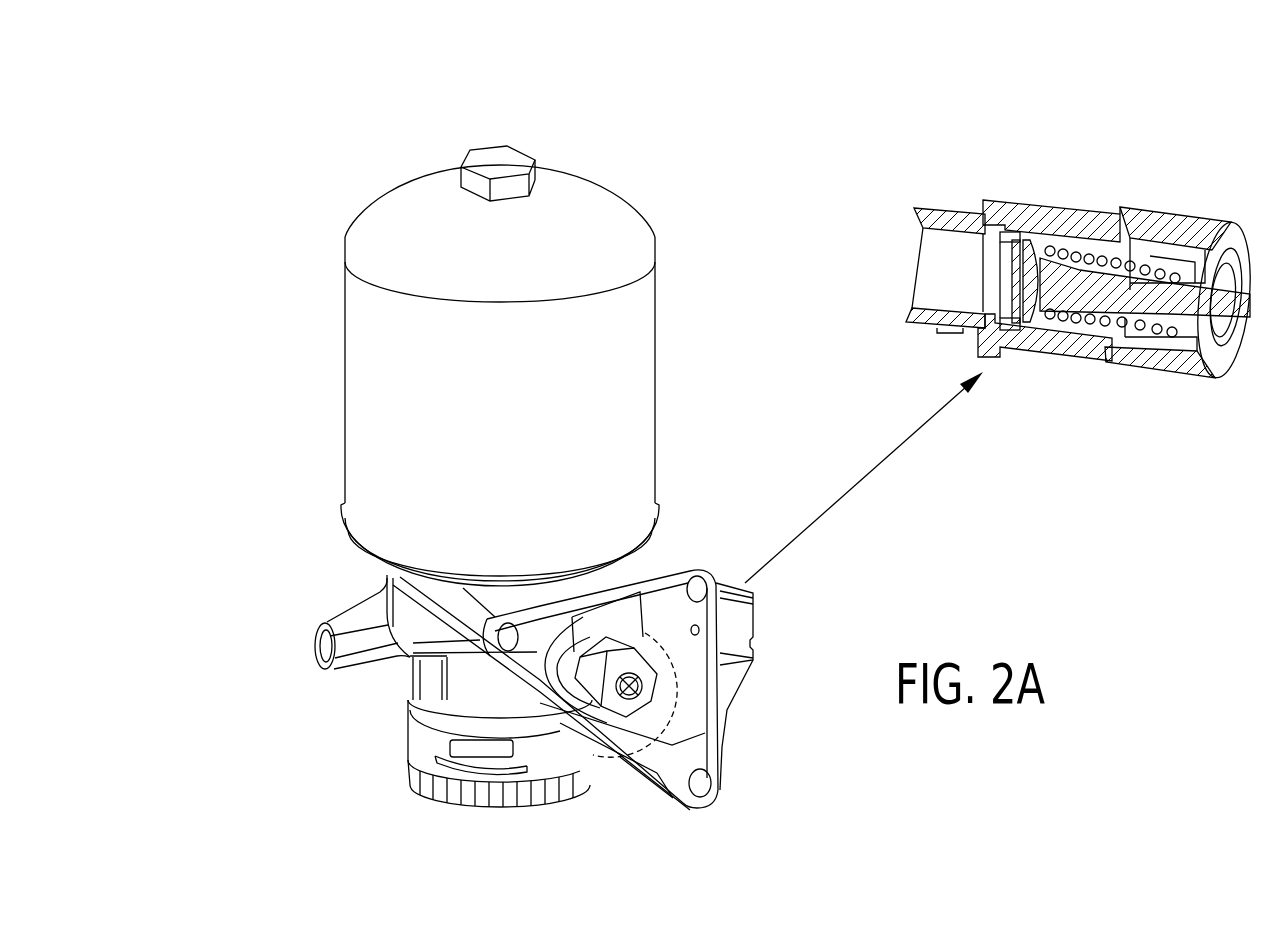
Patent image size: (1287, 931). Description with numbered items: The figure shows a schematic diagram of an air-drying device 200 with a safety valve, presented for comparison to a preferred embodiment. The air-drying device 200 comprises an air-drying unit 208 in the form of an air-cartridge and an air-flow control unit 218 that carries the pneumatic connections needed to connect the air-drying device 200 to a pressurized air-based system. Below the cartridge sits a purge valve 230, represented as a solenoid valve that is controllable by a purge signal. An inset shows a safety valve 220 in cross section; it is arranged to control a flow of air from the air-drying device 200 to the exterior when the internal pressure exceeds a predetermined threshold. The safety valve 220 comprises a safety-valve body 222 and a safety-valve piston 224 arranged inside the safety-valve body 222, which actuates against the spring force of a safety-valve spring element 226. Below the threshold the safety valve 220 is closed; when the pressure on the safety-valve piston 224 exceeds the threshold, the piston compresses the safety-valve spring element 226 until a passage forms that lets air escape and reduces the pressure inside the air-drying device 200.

The air-drying device 200 is at (373, 155).
The air-drying unit 208 is at (328, 336).
The air-flow control unit 218 is at (323, 603).
The safety valve 220 is at (1058, 183).
The safety-valve body 222 is at (1178, 207).
The safety-valve piston 224 is at (1040, 345).
The safety-valve spring element 226 is at (1132, 350).
The purge valve 230 is at (385, 753).